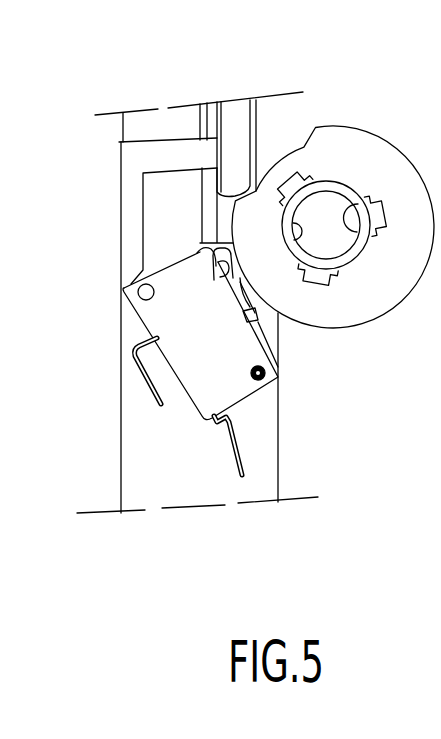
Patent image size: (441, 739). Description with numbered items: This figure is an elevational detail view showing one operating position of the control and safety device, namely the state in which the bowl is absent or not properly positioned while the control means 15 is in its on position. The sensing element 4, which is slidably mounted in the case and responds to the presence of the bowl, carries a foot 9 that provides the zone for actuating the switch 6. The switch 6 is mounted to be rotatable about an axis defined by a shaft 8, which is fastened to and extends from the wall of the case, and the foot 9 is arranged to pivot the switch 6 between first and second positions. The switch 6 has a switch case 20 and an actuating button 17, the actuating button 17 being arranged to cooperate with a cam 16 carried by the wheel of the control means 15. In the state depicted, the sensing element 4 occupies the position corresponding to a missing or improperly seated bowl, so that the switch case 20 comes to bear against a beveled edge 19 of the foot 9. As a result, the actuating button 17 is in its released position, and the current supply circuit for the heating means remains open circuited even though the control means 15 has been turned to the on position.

The sensing element 4 is at (236, 143).
The switch 6 is at (199, 333).
The shaft 8 is at (278, 377).
The foot 9 is at (132, 250).
The control means 15 is at (357, 128).
The cam 16 is at (278, 315).
The actuating button 17 is at (207, 272).
The beveled edge 19 is at (132, 284).
The switch case 20 is at (225, 373).